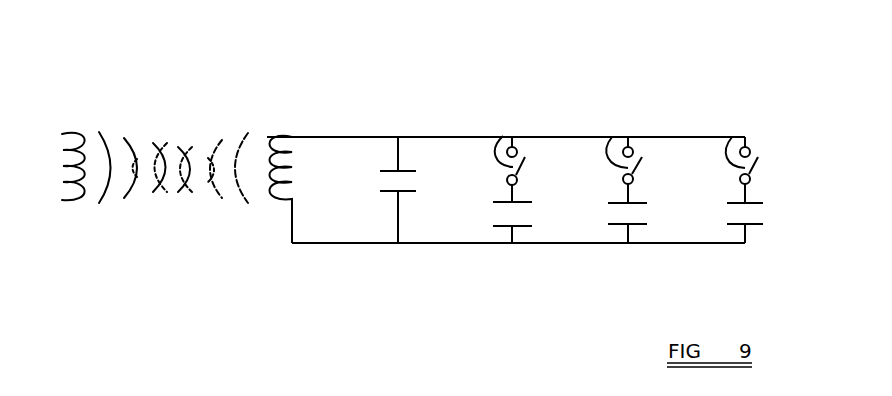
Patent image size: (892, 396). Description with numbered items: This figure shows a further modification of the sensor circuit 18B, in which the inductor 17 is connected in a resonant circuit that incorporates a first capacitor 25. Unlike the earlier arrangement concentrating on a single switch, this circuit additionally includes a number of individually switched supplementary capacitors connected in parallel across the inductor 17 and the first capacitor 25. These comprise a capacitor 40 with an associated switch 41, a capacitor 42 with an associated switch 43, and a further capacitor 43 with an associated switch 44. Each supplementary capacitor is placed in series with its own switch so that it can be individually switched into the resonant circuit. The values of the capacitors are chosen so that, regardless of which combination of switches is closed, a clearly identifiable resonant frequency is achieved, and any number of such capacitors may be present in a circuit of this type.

The sensor circuit 18B is at (442, 112).
The inductor 17 is at (272, 200).
The first capacitor 25 is at (406, 192).
The switch 41 is at (503, 136).
The capacitor 40 is at (518, 227).
The switch / capacitor 43 is at (612, 137).
The capacitor 42 is at (634, 226).
The switch 44 is at (732, 137).